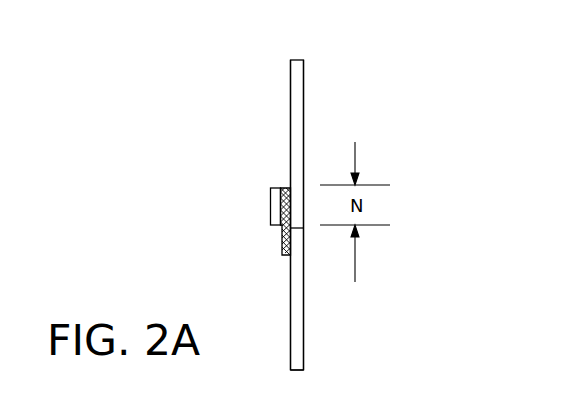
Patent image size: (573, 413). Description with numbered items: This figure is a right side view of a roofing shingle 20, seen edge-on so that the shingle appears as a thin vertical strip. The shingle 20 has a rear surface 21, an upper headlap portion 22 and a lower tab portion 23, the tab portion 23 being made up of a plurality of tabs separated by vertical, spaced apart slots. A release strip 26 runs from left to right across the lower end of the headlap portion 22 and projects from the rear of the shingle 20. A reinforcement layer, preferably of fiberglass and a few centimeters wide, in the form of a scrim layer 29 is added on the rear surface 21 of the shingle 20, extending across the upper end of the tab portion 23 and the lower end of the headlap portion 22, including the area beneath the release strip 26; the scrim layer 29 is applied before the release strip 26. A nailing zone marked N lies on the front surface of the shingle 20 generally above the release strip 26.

The shingle 20 is at (292, 72).
The rear surface 21 is at (290, 118).
The headlap portion 22 is at (304, 83).
The tab portion 23 is at (304, 331).
The release strip 26 is at (270, 202).
The scrim layer 29 is at (282, 240).